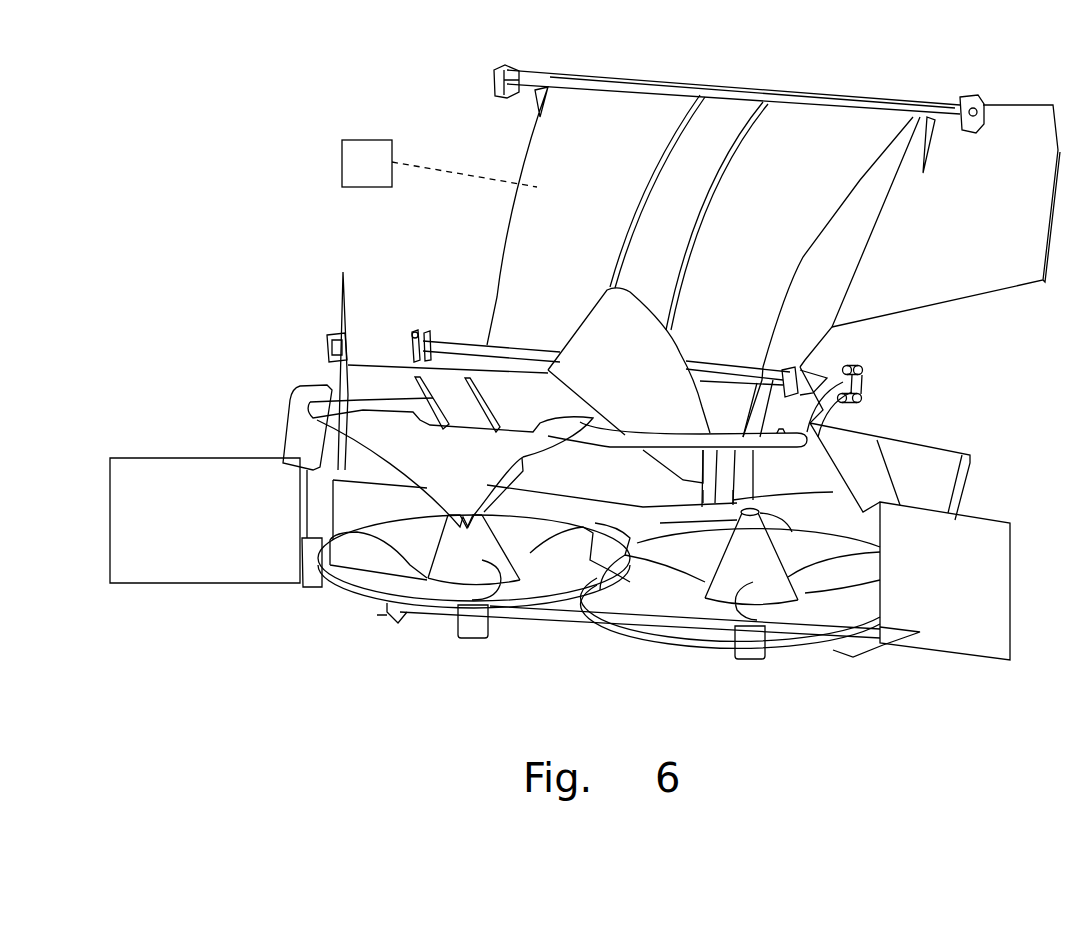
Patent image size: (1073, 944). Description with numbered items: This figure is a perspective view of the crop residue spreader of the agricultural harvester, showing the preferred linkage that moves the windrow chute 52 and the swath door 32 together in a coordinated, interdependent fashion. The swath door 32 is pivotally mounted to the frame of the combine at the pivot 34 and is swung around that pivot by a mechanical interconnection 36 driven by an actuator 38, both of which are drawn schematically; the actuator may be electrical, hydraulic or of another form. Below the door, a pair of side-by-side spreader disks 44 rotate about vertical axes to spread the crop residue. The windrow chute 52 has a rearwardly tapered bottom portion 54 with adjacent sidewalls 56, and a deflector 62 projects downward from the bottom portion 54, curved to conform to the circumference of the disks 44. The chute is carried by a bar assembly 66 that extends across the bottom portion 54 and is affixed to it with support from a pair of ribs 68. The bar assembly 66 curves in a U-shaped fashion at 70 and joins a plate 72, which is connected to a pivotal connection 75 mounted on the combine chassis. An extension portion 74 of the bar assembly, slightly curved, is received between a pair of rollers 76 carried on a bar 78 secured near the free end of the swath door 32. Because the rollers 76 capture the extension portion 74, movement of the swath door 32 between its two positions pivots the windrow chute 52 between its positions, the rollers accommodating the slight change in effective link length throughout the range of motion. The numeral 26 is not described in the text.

The spreader assembly 26 is at (593, 637).
The swath door 32 is at (793, 200).
The pivotal mounting 34 is at (977, 110).
The mechanical interconnection 36 is at (462, 170).
The actuating mechanism 38 is at (367, 163).
The disks 44 is at (367, 598).
The windrow chute 52 is at (487, 333).
The bottom portion 54 is at (363, 382).
The sidewalls 56 is at (342, 282).
The deflector 62 is at (357, 553).
The bar assembly 66 is at (630, 452).
The ribs 68 is at (317, 407).
The U-shaped curve 70 is at (777, 447).
The plate 72 is at (772, 420).
The extension portion 74 is at (825, 410).
The pivotal connection 75 is at (327, 340).
The rollers 76 is at (862, 398).
The bar 78 is at (770, 347).